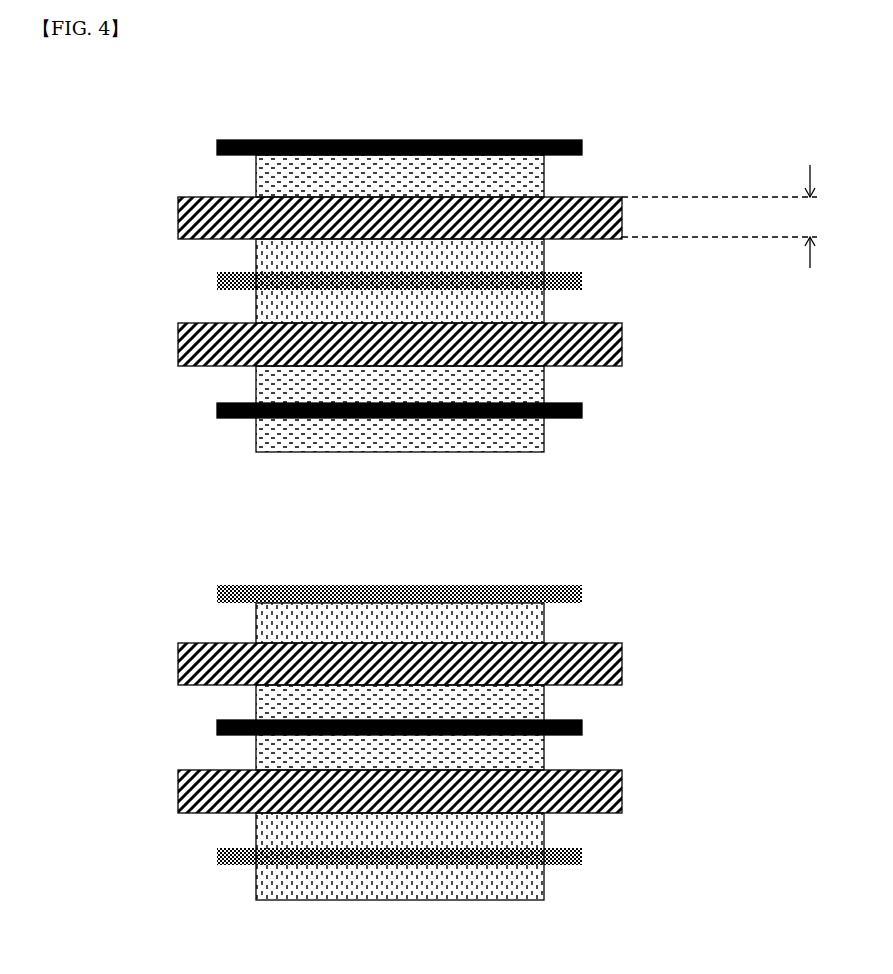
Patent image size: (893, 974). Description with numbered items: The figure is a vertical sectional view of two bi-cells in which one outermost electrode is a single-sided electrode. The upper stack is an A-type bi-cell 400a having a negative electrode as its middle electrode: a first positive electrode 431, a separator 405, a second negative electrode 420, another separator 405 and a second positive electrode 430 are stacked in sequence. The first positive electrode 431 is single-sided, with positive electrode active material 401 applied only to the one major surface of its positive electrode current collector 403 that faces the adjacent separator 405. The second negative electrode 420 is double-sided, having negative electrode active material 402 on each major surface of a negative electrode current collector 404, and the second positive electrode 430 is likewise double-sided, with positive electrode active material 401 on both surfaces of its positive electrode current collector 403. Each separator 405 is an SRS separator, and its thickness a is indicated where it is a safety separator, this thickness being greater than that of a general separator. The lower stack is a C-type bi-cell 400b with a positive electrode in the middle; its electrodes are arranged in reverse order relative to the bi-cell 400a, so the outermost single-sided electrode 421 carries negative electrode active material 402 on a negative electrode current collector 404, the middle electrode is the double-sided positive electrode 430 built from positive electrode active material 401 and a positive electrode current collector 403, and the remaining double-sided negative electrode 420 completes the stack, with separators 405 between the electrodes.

The bi-cell 400a is at (100, 142).
The bi-cell 400b is at (100, 583).
The positive electrode active material 401 is at (544, 170).
The negative electrode active material 402 is at (282, 257).
The positive electrode current collector 403 is at (582, 143).
The negative electrode current collector 404 is at (228, 282).
The separator 405 is at (622, 220).
The second negative electrode 420 is at (120, 225).
The single-sided negative electrode 421 is at (720, 570).
The second positive electrode 430 is at (725, 360).
The first positive electrode 431 is at (717, 125).
The thickness of safety separator a is at (724, 212).